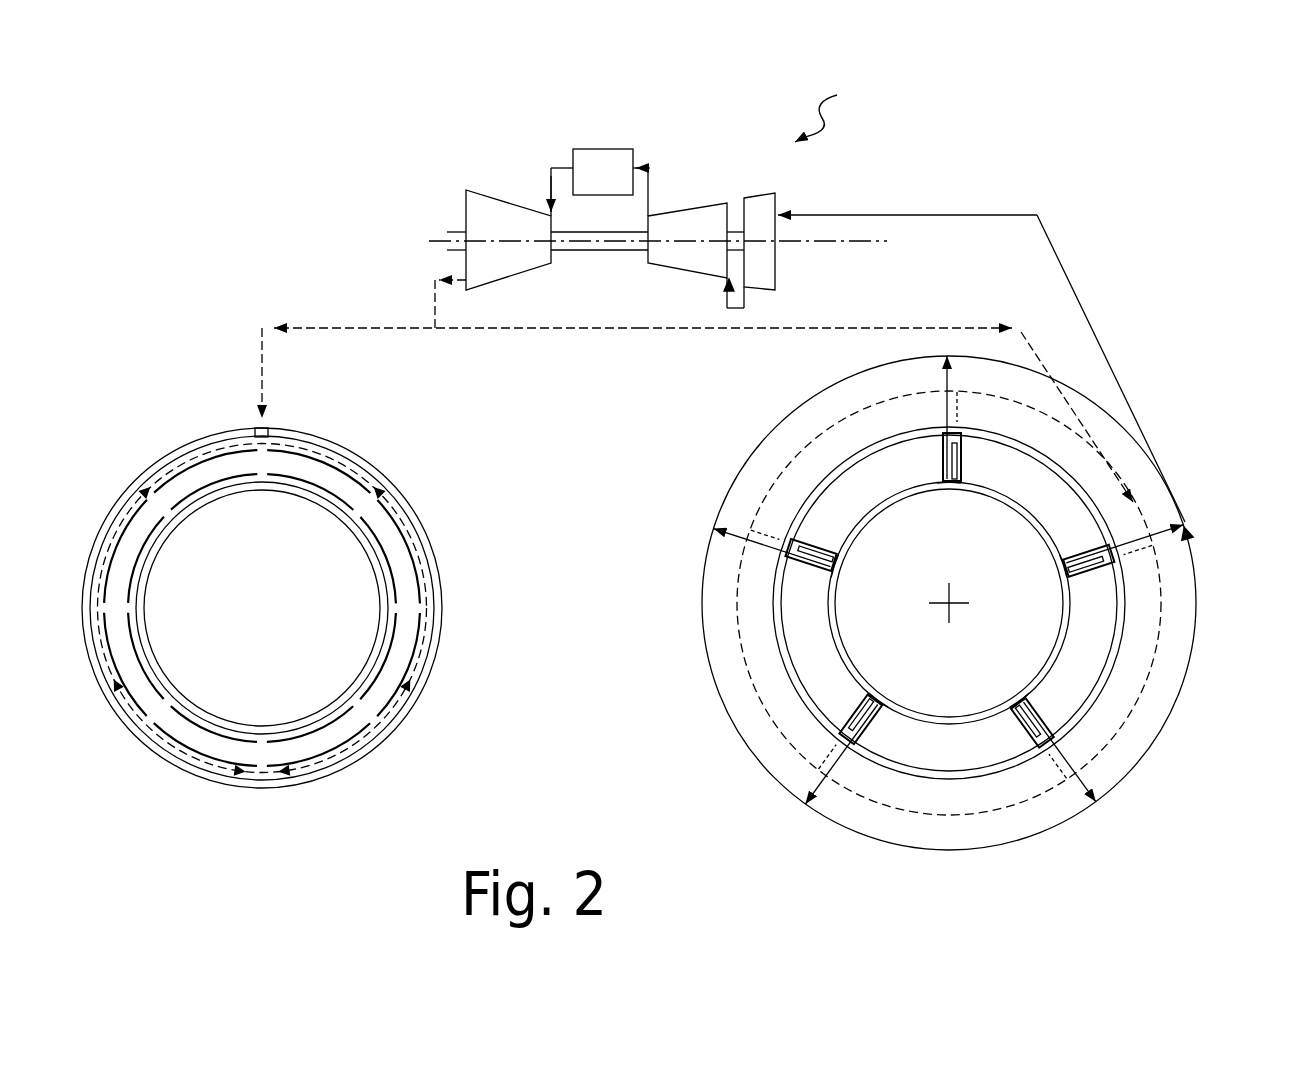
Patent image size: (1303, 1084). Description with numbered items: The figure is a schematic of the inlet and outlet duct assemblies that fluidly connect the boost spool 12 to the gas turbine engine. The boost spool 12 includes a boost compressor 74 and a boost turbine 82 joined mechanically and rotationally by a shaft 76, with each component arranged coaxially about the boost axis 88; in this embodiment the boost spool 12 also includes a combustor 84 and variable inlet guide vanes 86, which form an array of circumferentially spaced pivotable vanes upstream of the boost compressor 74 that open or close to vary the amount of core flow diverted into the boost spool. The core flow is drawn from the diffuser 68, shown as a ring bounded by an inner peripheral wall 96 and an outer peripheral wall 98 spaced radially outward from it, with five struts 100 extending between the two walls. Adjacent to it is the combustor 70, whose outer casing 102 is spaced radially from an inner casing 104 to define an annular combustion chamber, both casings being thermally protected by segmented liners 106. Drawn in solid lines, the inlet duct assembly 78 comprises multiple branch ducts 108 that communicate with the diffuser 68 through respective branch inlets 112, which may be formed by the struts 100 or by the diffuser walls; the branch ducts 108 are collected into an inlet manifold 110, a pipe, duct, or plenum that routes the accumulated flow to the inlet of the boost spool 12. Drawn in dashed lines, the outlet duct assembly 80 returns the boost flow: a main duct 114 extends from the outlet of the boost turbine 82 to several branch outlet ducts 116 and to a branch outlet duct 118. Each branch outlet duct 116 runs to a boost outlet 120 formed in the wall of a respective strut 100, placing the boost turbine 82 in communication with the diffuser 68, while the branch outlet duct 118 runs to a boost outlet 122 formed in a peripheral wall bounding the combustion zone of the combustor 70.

The boost spool 12 is at (829, 104).
The diffuser 68 is at (1013, 520).
The combustor 70 is at (432, 507).
The boost compressor 74 is at (693, 207).
The shaft 76 is at (602, 252).
The inlet duct assembly 78 is at (1172, 402).
The outlet duct assembly 80 is at (627, 342).
The boost turbine 82 is at (480, 190).
The combustor 84 is at (605, 148).
The variable inlet guide vanes 86 is at (777, 203).
The boost axis 88 is at (818, 243).
The inner peripheral wall 96 is at (1057, 642).
The outer peripheral wall 98 is at (1037, 447).
The struts 100 is at (952, 478).
The outer casing 102 is at (372, 465).
The inner casing 104 is at (306, 500).
The segmented liners 106 is at (217, 478).
The branch ducts 108 is at (943, 411).
The inlet manifold 110 is at (703, 613).
The branch inlets 112 is at (940, 457).
The main duct 114 is at (435, 303).
The branch outlet ducts 116 is at (958, 408).
The branch outlet duct 118 is at (262, 363).
The boost outlets 120 is at (959, 455).
The boost outlet 122 is at (269, 428).